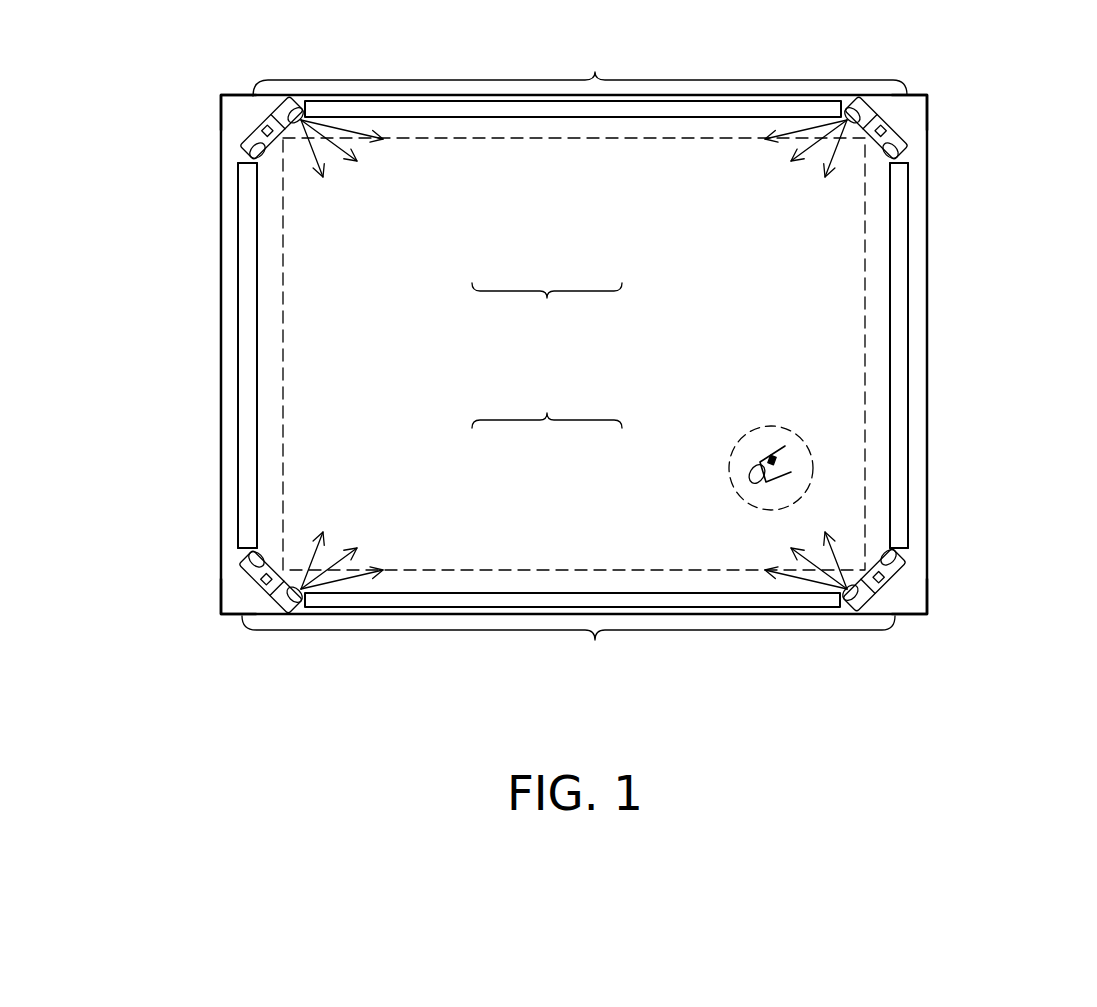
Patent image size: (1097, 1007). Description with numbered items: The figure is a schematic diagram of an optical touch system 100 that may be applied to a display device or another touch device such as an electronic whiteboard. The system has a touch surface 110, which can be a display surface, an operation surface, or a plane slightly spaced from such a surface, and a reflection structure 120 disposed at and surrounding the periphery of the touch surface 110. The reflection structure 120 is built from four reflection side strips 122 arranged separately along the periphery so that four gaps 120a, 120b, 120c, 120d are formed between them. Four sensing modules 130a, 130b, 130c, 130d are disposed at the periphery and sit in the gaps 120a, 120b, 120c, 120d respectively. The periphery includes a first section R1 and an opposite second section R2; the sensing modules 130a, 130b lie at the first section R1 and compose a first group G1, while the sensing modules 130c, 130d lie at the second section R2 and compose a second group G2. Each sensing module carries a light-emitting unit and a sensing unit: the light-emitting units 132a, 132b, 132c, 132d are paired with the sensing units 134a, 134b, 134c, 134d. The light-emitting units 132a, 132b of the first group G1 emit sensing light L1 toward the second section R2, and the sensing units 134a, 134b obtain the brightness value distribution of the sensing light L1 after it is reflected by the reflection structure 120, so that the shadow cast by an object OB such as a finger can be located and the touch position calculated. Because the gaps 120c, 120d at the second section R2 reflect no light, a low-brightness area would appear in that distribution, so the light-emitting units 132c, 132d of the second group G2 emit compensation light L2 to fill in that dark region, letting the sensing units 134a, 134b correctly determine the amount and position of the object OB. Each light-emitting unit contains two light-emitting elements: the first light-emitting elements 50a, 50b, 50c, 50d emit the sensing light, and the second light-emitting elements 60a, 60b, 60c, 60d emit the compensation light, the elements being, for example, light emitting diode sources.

The optical touch system 100 is at (1047, 730).
The touch surface 110 is at (866, 305).
The reflection structure 120 is at (919, 403).
The gap 120a is at (242, 158).
The gap 120b is at (906, 158).
The gap 120c is at (905, 552).
The gap 120d is at (245, 552).
The reflection side strip 122 is at (824, 104).
The sensing module 130a is at (274, 164).
The sensing module 130b is at (874, 164).
The sensing module 130c is at (870, 545).
The sensing module 130d is at (274, 545).
The light-emitting unit 132a is at (189, 124).
The light-emitting unit 132b is at (957, 124).
The light-emitting unit 132c is at (956, 585).
The light-emitting unit 132d is at (189, 586).
The sensing unit 134a is at (270, 172).
The sensing unit 134b is at (878, 172).
The sensing unit 134c is at (878, 538).
The sensing unit 134d is at (270, 538).
The first light-emitting element 50a is at (262, 130).
The first light-emitting element 50b is at (886, 130).
The first light-emitting element 50c is at (893, 572).
The first light-emitting element 50d is at (255, 572).
The second light-emitting element 60a is at (258, 147).
The second light-emitting element 60b is at (890, 147).
The second light-emitting element 60c is at (868, 590).
The second light-emitting element 60d is at (270, 585).
The first group G1 is at (547, 308).
The second group G2 is at (547, 400).
The first section R1 is at (580, 66).
The second section R2 is at (568, 647).
The sensing light L1 is at (335, 152).
The compensation light L2 is at (343, 571).
The object OB is at (765, 457).